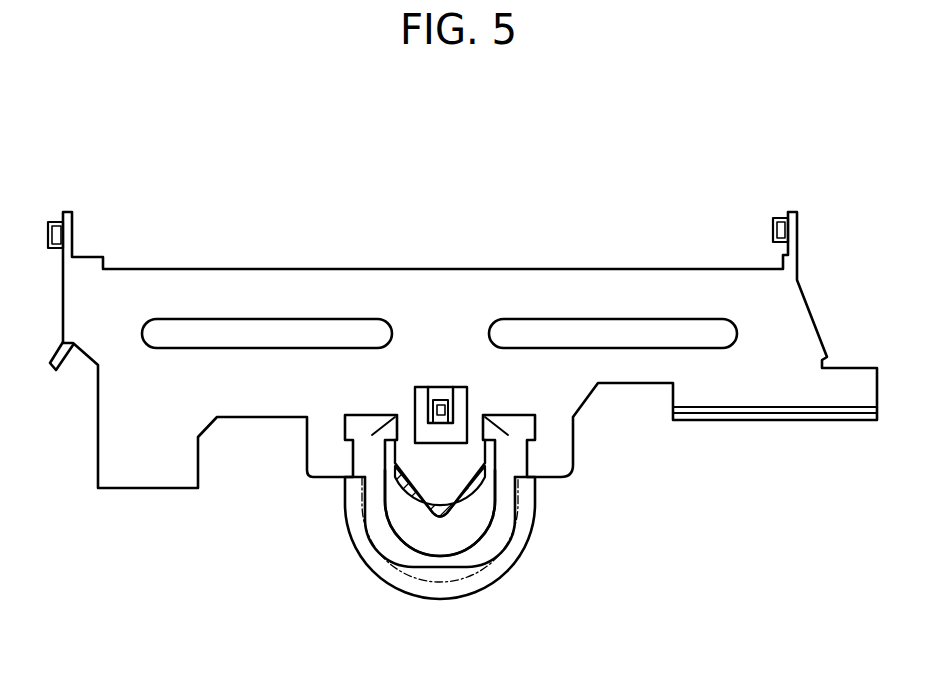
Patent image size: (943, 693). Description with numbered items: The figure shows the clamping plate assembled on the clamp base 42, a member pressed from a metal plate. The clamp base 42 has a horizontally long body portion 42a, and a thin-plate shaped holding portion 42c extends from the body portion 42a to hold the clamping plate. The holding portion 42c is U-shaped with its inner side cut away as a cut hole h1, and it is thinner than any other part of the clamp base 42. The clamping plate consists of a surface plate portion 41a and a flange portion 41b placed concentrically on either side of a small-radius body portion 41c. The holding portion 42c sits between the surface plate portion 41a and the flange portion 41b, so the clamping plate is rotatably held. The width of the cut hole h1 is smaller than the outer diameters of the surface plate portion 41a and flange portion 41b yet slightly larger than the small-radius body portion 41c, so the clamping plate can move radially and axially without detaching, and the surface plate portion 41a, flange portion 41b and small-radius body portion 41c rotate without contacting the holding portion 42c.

The clamp base 42 is at (300, 246).
The body portion 42a is at (437, 295).
The holding portion 42c is at (498, 523).
The surface plate portion 41a is at (345, 525).
The flange portion 41b is at (377, 557).
The small-radius body portion 41c is at (436, 520).
The cut hole h1 is at (482, 475).